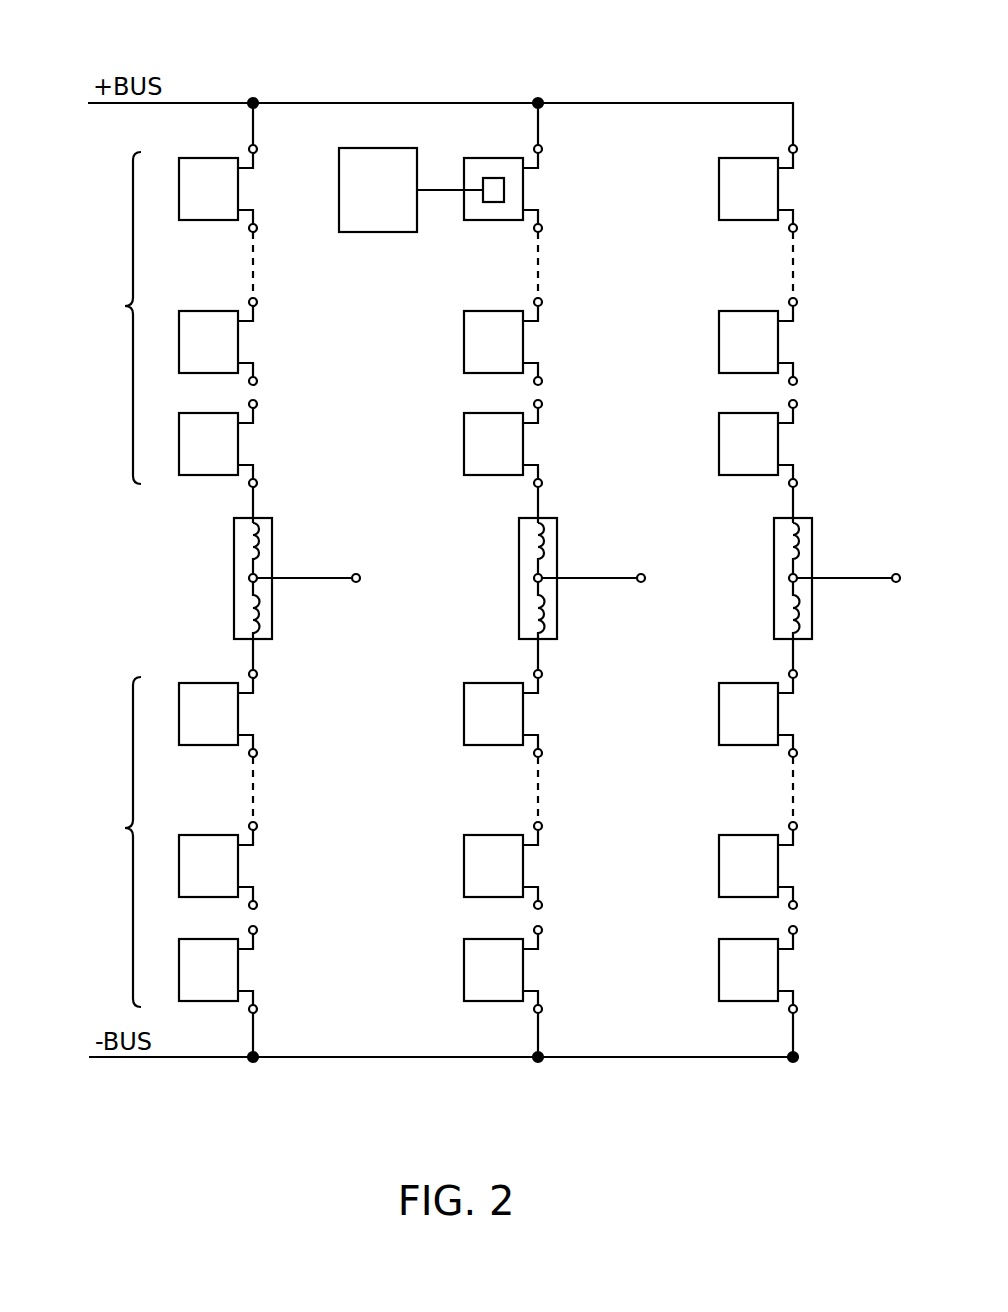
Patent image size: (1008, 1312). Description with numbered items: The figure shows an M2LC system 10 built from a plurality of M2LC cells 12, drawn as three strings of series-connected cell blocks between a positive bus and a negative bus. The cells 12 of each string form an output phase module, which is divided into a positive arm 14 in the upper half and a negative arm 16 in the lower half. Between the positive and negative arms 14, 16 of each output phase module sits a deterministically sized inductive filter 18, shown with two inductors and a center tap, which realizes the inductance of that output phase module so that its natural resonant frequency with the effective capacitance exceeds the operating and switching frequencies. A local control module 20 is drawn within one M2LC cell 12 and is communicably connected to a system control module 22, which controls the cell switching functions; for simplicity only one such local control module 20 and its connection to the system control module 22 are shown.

The M2LC system 10 is at (626, 66).
The M2LC cell 12 is at (221, 203).
The positive arm 14 is at (125, 306).
The negative arm 16 is at (125, 828).
The inductive filter 18 is at (272, 548).
The local control module 20 is at (495, 202).
The system control module 22 is at (365, 203).